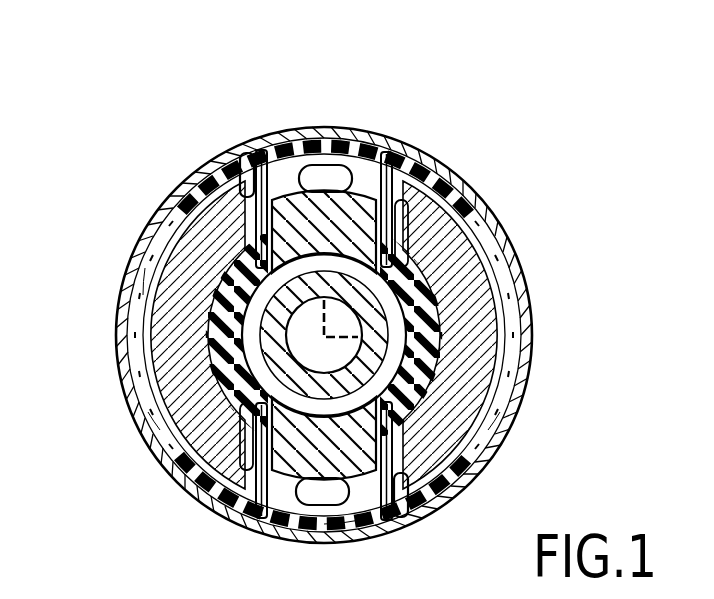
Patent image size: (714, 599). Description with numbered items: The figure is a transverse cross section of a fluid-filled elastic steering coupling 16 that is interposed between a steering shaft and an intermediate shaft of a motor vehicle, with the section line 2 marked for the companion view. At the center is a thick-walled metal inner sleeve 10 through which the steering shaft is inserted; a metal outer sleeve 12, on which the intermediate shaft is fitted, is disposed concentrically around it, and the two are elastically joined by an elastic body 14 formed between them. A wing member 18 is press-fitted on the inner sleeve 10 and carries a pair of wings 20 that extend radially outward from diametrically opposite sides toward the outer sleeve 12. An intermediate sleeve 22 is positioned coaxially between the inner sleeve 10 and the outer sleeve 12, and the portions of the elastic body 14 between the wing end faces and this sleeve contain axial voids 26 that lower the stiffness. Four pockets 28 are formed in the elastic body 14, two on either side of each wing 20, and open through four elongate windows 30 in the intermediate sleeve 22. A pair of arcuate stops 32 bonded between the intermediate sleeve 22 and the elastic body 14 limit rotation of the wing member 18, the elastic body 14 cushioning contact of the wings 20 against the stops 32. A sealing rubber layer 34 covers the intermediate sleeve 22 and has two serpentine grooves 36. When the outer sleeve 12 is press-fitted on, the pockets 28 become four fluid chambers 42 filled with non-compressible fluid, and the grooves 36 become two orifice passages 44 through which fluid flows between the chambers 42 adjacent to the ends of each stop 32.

The section line 2- 2 is at (290, 43).
The inner sleeve 10 is at (290, 347).
The outer sleeve 12 is at (522, 273).
The elastic body 14 is at (483, 402).
The steering coupling 16 is at (230, 98).
The wing member 18 is at (448, 310).
The wings 20 is at (360, 210).
The intermediate sleeve 22 is at (150, 282).
The voids 26 is at (335, 175).
The pockets 28 is at (253, 237).
The windows 30 is at (262, 150).
The arcuate stops 32 is at (165, 330).
The sealing rubber layer 34 is at (358, 522).
The serpentine grooves 36 is at (175, 420).
The fluid chambers 42 is at (223, 180).
The orifice passages 44 is at (162, 238).